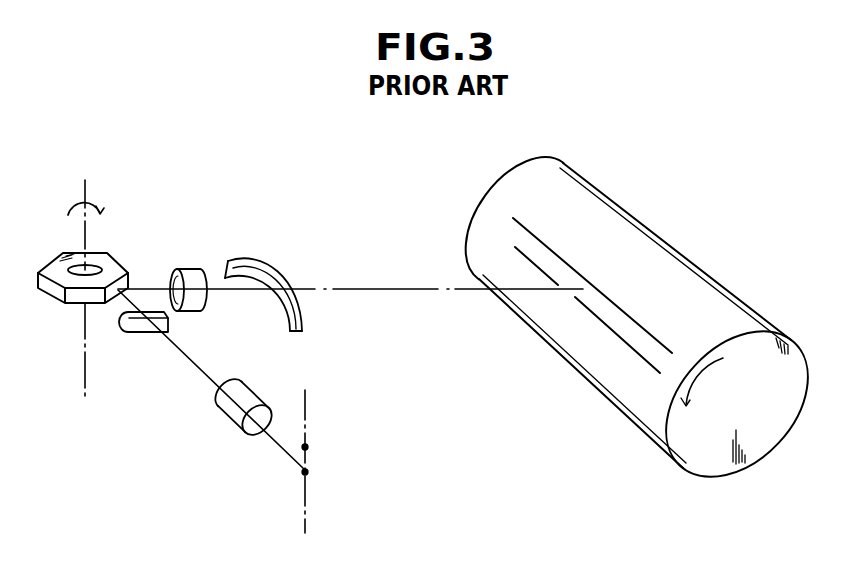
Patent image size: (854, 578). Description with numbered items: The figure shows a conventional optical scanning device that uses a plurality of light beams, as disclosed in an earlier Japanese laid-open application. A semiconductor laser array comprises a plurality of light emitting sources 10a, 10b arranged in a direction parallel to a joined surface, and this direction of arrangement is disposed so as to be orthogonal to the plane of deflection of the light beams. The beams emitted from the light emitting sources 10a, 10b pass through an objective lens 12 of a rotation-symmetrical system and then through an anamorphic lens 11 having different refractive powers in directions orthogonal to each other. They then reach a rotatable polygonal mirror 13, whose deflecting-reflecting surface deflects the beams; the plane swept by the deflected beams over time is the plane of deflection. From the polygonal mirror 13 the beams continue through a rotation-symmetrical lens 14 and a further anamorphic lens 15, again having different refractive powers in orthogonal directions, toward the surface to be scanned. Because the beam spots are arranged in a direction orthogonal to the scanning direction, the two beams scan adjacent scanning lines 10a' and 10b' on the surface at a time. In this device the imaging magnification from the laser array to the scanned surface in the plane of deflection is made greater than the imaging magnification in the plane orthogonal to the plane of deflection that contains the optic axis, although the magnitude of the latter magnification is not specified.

The anamorphic lens 11 is at (137, 328).
The objective lens 12 is at (230, 418).
The rotatable polygonal mirror 13 is at (54, 293).
The rotation-symmetrical lens 14 is at (192, 269).
The anamorphic lens 15 is at (268, 270).
The light emitting source 10a is at (342, 447).
The light emitting source 10b is at (343, 483).
The scanning line 10a' is at (592, 285).
The scanning line 10b' is at (569, 335).